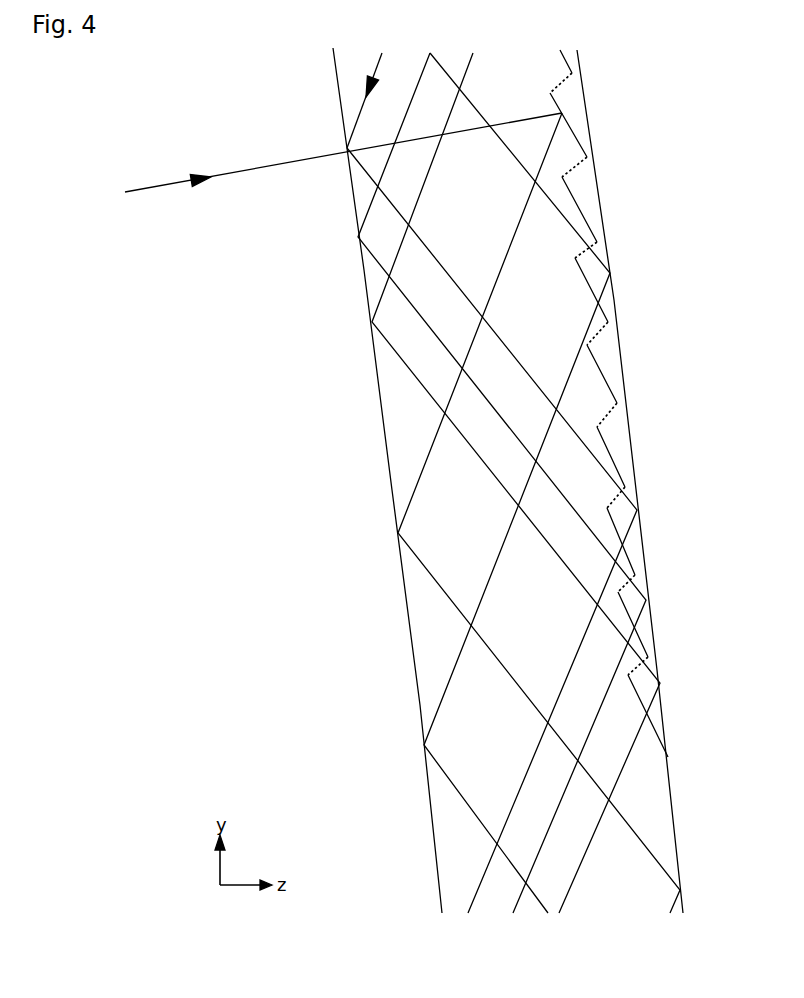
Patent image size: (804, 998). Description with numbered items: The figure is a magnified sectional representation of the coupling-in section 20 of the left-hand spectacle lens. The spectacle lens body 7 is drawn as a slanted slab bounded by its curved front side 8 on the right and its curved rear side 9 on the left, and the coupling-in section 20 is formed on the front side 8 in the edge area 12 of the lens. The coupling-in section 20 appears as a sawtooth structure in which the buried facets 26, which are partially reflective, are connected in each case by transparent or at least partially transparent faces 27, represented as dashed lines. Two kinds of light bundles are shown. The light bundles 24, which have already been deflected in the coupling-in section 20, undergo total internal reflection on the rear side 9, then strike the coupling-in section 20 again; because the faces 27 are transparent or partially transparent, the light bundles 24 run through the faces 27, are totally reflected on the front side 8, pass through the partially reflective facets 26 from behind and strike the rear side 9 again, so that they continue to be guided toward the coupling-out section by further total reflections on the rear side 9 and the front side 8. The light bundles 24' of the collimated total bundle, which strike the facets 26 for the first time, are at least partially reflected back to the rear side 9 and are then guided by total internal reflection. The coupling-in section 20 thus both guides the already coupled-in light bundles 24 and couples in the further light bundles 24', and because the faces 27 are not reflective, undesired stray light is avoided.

The spectacle lens body 7 is at (505, 480).
The front side 8 is at (617, 315).
The rear side 9 is at (412, 640).
The edge area 12 is at (638, 420).
The coupling-in section 20 is at (652, 403).
The light bundles 24 is at (322, 100).
The light bundles 24' is at (343, 189).
The buried facets 26 is at (628, 547).
The transparent faces 27 is at (620, 587).